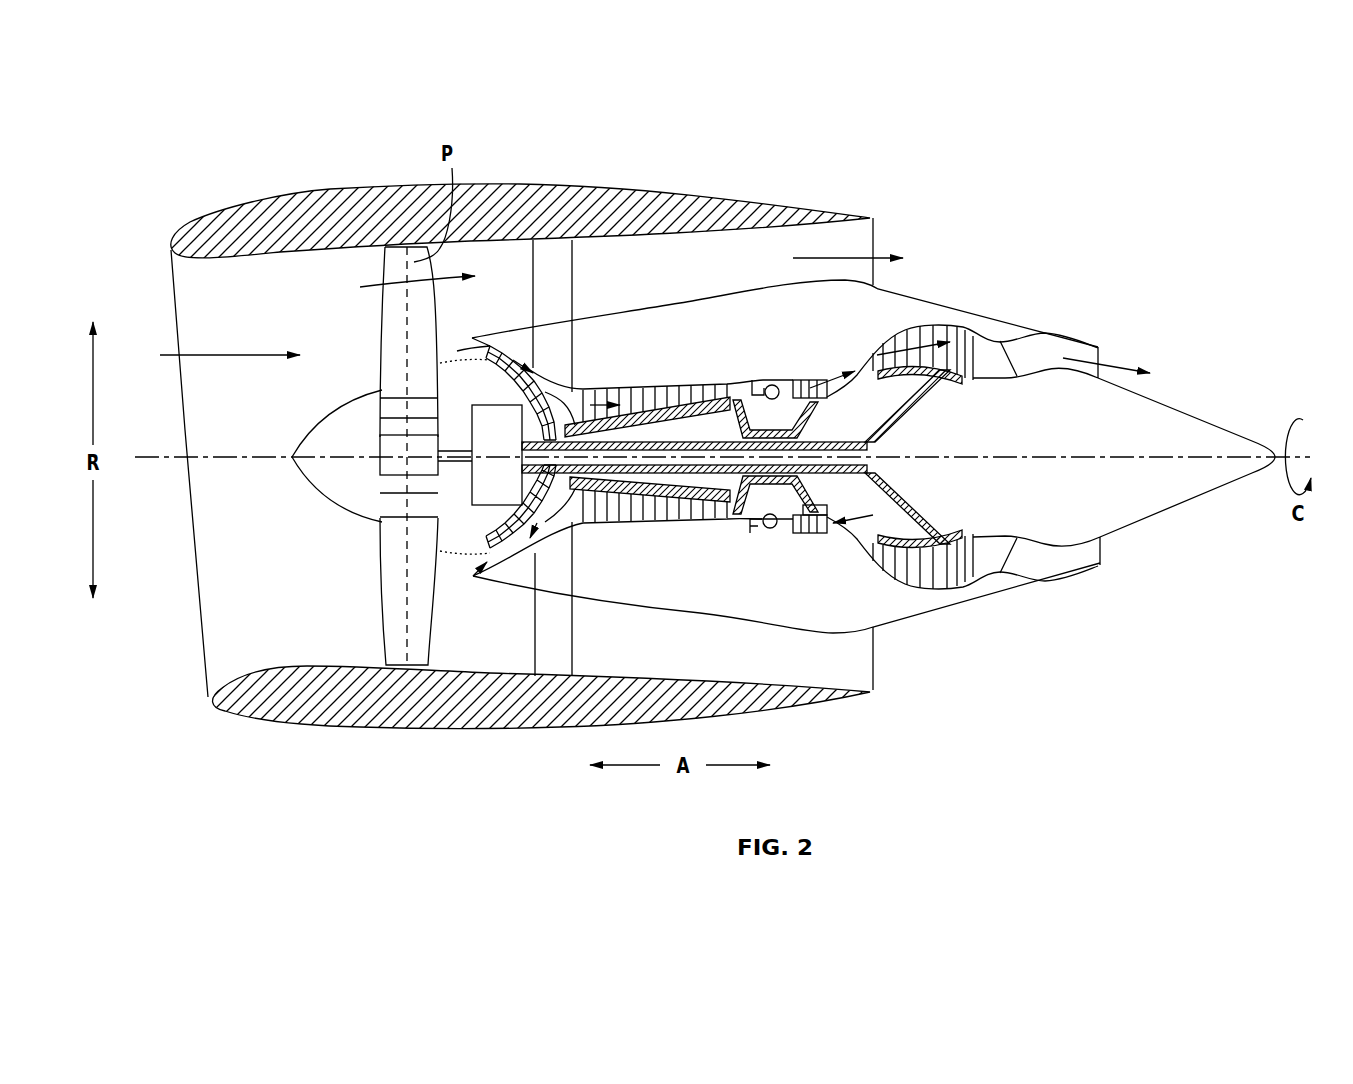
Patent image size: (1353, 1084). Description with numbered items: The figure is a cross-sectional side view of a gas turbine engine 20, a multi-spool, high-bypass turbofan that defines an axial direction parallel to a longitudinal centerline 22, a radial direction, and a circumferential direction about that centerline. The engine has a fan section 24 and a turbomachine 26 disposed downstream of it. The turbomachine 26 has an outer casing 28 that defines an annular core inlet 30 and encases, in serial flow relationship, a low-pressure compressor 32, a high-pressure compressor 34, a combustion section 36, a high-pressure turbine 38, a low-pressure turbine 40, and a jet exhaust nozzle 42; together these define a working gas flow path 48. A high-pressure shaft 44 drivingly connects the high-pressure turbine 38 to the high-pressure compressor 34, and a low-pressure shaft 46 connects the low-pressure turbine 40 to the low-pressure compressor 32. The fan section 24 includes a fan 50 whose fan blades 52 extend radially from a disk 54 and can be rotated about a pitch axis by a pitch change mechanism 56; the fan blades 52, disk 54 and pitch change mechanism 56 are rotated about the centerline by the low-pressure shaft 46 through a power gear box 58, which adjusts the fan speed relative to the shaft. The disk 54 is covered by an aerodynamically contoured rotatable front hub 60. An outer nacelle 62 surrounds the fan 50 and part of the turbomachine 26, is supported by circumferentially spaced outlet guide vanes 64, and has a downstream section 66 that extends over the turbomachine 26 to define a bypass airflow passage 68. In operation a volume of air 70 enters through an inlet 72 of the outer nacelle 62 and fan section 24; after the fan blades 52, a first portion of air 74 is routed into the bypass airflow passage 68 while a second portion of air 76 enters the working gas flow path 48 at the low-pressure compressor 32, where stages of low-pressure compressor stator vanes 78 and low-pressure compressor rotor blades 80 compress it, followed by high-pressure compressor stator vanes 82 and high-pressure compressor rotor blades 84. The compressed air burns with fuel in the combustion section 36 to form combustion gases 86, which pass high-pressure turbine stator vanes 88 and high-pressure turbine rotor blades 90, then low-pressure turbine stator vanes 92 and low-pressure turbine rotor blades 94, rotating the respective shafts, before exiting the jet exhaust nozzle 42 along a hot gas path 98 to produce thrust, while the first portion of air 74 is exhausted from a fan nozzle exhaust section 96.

The gas turbine engine 20 is at (1018, 200).
The longitudinal centerline 22 is at (1040, 457).
The fan section 24 is at (340, 272).
The turbomachine 26 is at (673, 340).
The outer casing 28 is at (717, 618).
The annular core inlet 30 is at (473, 576).
The low-pressure compressor 32 is at (527, 522).
The high-pressure compressor 34 is at (602, 522).
The combustion section 36 is at (767, 530).
The high-pressure turbine 38 is at (922, 508).
The low-pressure turbine 40 is at (948, 592).
The jet exhaust nozzle 42 is at (1013, 575).
The high-pressure shaft 44 is at (777, 430).
The low-pressure shaft 46 is at (880, 430).
The working gas flow path 48 is at (560, 516).
The fan 50 is at (343, 505).
The fan blades 52 is at (380, 588).
The disk 54 is at (398, 417).
The pitch change mechanism 56 is at (380, 440).
The power gear box 58 is at (543, 373).
The front hub 60 is at (380, 440).
The outer nacelle 62 is at (428, 738).
The outlet guide vanes 64 is at (572, 278).
The downstream section 66 is at (813, 218).
The bypass airflow passage 68 is at (733, 262).
The volume of air 70 is at (222, 352).
The inlet 72 is at (207, 667).
The first portion of air 74 is at (838, 257).
The second portion of air 76 is at (462, 349).
The low-pressure compressor stator vanes 78 is at (473, 576).
The low-pressure compressor rotor blades 80 is at (473, 576).
The high-pressure compressor stator vanes 82 is at (648, 510).
The high-pressure compressor rotor blades 84 is at (660, 510).
The combustion gases 86 is at (913, 343).
The high-pressure turbine stator vanes 88 is at (795, 530).
The high-pressure turbine rotor blades 90 is at (803, 518).
The low-pressure turbine stator vanes 92 is at (878, 565).
The low-pressure turbine rotor blades 94 is at (892, 572).
The fan nozzle exhaust section 96 is at (862, 243).
The hot gas path 98 is at (862, 360).